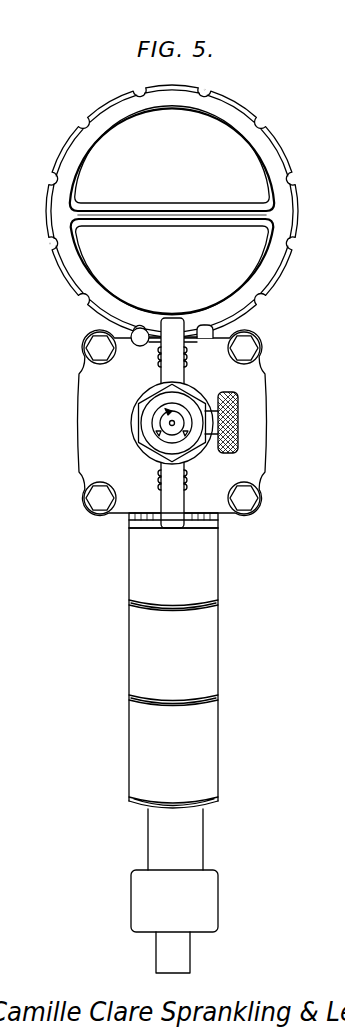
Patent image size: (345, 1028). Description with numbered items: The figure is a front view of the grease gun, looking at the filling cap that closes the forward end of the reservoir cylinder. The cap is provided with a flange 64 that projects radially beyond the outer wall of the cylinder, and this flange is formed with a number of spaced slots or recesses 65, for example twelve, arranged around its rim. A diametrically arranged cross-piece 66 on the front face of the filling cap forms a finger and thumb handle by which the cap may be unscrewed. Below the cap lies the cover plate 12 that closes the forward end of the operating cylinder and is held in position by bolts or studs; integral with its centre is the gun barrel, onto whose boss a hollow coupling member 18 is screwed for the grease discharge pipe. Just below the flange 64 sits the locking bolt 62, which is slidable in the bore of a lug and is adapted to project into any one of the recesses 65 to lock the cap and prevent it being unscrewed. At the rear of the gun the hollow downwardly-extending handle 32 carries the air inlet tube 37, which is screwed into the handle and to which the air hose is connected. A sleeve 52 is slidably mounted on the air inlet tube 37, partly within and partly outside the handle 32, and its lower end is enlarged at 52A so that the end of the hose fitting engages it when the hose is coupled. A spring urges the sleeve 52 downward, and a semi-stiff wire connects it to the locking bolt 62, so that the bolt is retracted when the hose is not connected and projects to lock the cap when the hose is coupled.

The cover plate 12 is at (268, 447).
The hollow coupling member 18 is at (183, 458).
The hollow downwardly-extending handle 32 is at (142, 643).
The air inlet tube 37 is at (182, 957).
The sleeve 52 is at (183, 850).
The enlarged lower end of sleeve 52A is at (198, 911).
The locking bolt 62 is at (131, 339).
The flange 64 is at (77, 147).
The spaced slots or recesses 65 is at (204, 96).
The cross-piece 66 is at (178, 213).